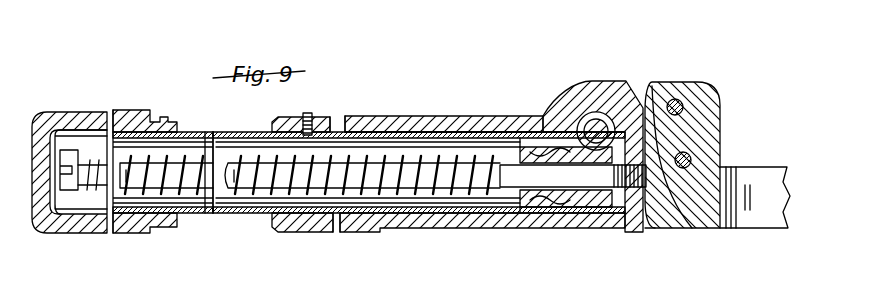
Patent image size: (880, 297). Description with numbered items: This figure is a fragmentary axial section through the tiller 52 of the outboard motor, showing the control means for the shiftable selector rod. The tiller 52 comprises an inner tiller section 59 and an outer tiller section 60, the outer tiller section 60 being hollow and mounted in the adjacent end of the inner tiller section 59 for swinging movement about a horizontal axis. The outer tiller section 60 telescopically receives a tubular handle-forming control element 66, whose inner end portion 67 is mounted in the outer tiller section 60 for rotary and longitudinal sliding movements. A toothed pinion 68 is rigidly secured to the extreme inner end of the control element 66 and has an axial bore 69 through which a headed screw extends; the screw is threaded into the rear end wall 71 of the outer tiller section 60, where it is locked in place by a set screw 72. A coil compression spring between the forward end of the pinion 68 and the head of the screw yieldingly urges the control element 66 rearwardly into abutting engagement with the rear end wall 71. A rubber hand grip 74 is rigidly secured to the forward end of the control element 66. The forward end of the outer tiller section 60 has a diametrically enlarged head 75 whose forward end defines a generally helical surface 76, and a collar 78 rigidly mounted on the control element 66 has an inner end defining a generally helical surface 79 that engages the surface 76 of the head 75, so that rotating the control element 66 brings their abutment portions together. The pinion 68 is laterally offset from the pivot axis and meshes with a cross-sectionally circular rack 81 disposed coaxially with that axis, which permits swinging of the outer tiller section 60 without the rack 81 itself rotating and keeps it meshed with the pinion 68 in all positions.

The tiller 52 is at (773, 158).
The inner tiller section 59 is at (767, 218).
The outer tiller section 60 is at (458, 230).
The control element 66 is at (233, 131).
The inner end portion 67 is at (455, 137).
The toothed pinion 68 is at (590, 208).
The axial bore 69 is at (528, 212).
The rear end wall 71 is at (644, 110).
The set screw 72 is at (652, 230).
The hand grip 74 is at (125, 118).
The head 75 is at (362, 114).
The helical surface 76 is at (334, 233).
The collar 78 is at (300, 229).
The helical surface 79 is at (334, 118).
The rack 81 is at (594, 126).